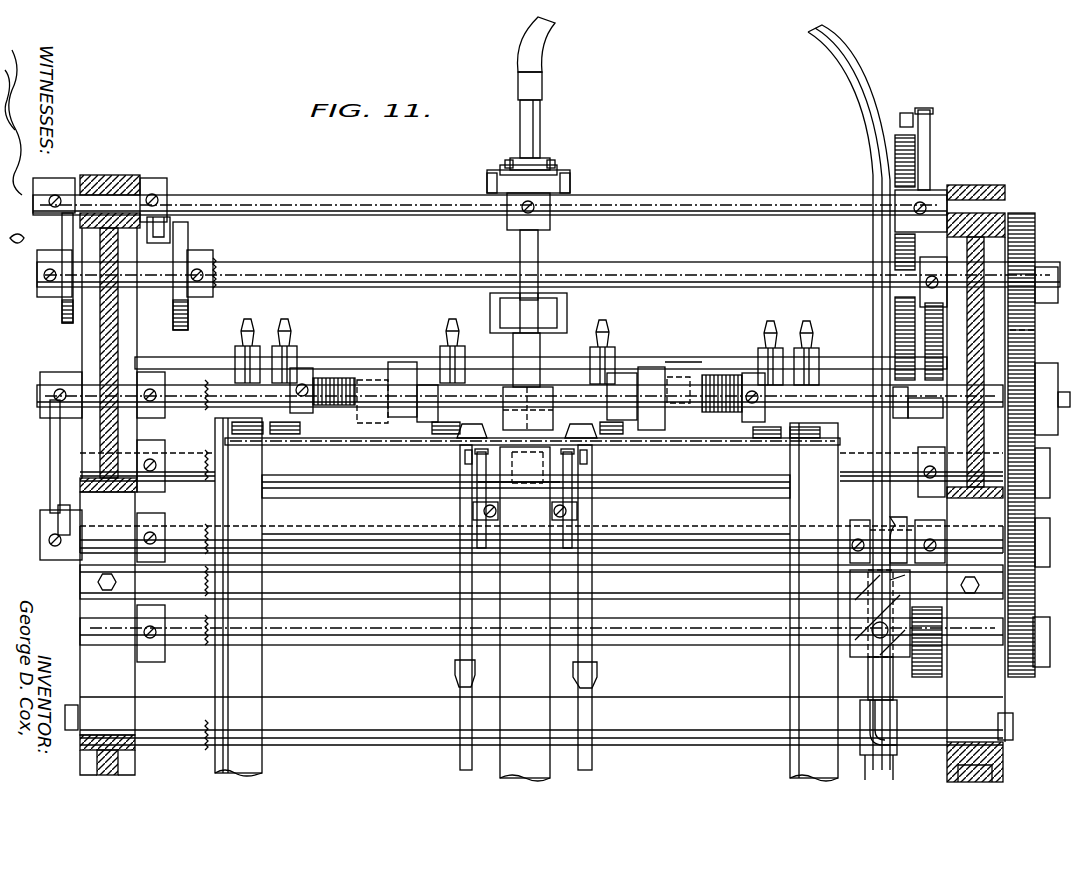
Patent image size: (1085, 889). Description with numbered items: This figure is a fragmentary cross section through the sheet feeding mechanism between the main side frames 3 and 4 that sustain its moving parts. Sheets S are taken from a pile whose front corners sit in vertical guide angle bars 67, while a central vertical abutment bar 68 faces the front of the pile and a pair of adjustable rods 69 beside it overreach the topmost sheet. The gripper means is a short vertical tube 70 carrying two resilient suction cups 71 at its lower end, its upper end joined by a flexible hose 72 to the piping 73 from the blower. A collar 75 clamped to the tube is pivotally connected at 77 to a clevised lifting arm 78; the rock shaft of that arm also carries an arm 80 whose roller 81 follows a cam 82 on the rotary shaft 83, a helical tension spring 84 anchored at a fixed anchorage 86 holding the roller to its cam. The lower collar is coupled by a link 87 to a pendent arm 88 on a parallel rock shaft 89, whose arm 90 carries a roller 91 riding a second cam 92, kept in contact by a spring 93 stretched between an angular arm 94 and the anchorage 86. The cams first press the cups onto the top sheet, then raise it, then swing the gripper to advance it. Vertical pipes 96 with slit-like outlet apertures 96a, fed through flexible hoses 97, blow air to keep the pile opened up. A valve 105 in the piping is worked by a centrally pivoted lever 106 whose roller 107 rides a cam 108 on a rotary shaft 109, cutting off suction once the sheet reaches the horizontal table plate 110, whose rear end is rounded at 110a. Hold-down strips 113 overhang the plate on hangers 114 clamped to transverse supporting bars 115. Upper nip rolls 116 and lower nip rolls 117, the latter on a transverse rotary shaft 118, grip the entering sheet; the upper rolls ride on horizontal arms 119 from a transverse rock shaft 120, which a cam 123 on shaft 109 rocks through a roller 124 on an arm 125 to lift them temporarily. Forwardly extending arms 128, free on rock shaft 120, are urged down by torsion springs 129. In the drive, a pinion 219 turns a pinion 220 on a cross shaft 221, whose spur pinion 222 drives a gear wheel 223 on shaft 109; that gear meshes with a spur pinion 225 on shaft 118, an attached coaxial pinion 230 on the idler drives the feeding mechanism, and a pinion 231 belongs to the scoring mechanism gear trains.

The main side frame 3 is at (965, 185).
The main side frame 4 is at (108, 176).
The vertical guide angle bars 67 is at (262, 670).
The central vertical abutment bar 68 is at (525, 614).
The rods 69 is at (485, 492).
The tube 70 is at (540, 113).
The suction cups 71 is at (470, 438).
The flexible hose 72 is at (540, 58).
The piping 73 is at (873, 336).
The collar 75 is at (545, 158).
The pivot 77 is at (570, 180).
The clevised lifting arm 78 is at (500, 172).
The arm 80 is at (167, 186).
The roller 81 is at (188, 235).
The cam 82 is at (173, 313).
The rotary shaft 83 is at (395, 262).
The helical tension spring 84 is at (938, 190).
The fixed anchorage 86 is at (920, 418).
The link 87 is at (515, 295).
The pendent arm 88 is at (538, 242).
The rock shaft 89 is at (390, 195).
The arm 90 is at (55, 178).
The roller 91 is at (14, 240).
The cam 92 is at (62, 314).
The helical spring 93 is at (895, 160).
The angular arm 94 is at (923, 110).
The vertical pipes 96 is at (460, 582).
The slit-like discharge outlet apertures 96a is at (465, 455).
The flexible hoses 97 is at (460, 760).
The valve 105 is at (850, 580).
The lever 106 is at (850, 607).
The roller 107 is at (870, 520).
The cam 108 is at (877, 512).
The rotary shaft 109 is at (395, 522).
The horizontal table plate 110 is at (185, 438).
The rounded rear end of plate 110a is at (478, 482).
The hold-down strips 113 is at (250, 434).
The hangers 114 is at (283, 322).
The transverse supporting bars 115 is at (678, 357).
The upper nip rolls 116 is at (402, 362).
The lower nip rolls 117 is at (335, 498).
The transverse rotary shaft 118 is at (170, 481).
The horizontal arms 119 is at (427, 385).
The transverse rock shaft 120 is at (185, 385).
The cam 123 is at (80, 586).
The roller 124 is at (58, 515).
The arm 125 is at (50, 440).
The forwardly extending arms 128 is at (372, 380).
The torsion springs 129 is at (305, 368).
The pinion 219 is at (1025, 345).
The pinion 220 is at (925, 677).
The cross shaft 221 is at (640, 645).
The spur pinion 222 is at (1025, 677).
The gear wheel 223 is at (1040, 545).
The spur pinion 225 is at (1040, 478).
The pinion 230 is at (1058, 353).
The pinion 231 is at (1025, 213).
The sheet S is at (338, 444).